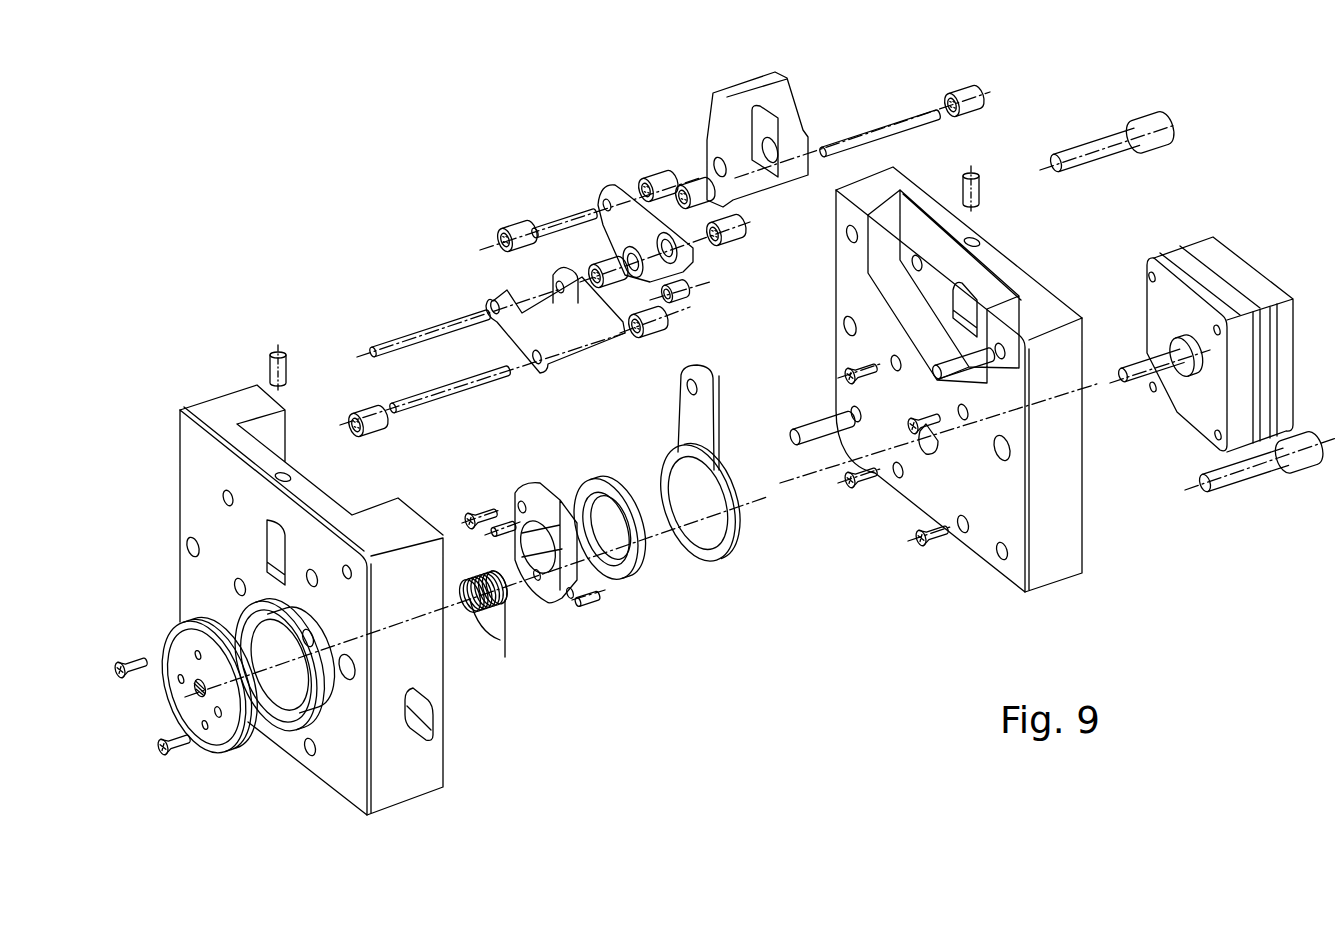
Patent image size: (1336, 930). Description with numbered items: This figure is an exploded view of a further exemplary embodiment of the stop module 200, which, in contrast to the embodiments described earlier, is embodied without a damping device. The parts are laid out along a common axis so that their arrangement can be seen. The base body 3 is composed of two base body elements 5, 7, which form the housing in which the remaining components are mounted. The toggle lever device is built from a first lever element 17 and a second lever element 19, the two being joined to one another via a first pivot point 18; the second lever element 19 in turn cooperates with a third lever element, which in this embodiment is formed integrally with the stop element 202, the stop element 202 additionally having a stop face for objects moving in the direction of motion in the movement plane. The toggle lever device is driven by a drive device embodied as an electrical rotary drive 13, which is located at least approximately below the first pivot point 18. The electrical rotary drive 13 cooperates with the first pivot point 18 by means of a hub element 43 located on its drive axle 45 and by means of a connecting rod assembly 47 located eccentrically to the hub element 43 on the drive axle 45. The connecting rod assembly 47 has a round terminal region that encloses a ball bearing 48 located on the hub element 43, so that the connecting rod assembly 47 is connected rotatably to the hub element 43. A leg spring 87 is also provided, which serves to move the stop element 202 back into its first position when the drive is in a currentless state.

The stop module 200 is at (283, 196).
The stop element 202 is at (733, 92).
The second lever element 19 is at (620, 185).
The first lever element 17 is at (492, 303).
The first pivot point 18 is at (380, 337).
The base body element 5 is at (193, 452).
The base body 3 is at (175, 487).
The base body element 7 is at (1016, 280).
The electrical rotary drive 13 is at (1248, 272).
The drive axle 45 is at (1137, 383).
The connecting rod assembly 47 is at (733, 542).
The ball bearing 48 is at (637, 567).
The hub element 43 is at (553, 593).
The leg spring 87 is at (490, 625).